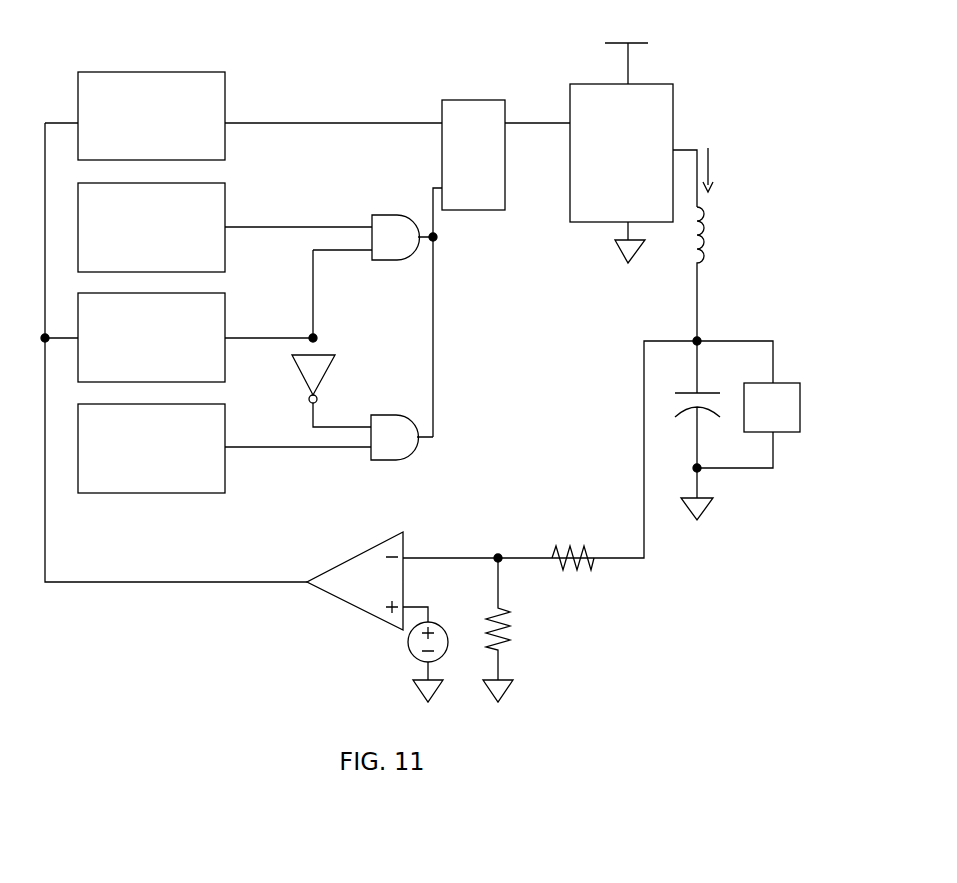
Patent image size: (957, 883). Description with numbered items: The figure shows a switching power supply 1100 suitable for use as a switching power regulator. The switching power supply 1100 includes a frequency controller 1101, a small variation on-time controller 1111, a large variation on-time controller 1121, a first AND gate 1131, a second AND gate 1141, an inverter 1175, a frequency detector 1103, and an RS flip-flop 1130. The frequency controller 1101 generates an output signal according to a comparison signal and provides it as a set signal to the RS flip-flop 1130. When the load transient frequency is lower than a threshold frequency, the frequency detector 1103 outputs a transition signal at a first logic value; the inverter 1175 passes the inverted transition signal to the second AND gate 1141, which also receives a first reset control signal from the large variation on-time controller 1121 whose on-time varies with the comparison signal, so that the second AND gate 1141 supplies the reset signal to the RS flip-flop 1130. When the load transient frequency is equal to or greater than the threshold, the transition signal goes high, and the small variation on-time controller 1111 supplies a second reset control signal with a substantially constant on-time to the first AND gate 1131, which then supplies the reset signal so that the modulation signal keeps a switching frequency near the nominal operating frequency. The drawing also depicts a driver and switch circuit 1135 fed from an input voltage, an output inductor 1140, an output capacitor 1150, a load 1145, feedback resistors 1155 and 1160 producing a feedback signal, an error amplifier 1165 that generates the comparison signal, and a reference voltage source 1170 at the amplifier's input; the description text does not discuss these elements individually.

The switching power supply 1100 is at (427, 356).
The frequency controller 1101 is at (228, 146).
The small variation on-time controller 1111 is at (228, 244).
The frequency detector 1103 is at (228, 363).
The large variation on-time controller 1121 is at (228, 487).
The first AND gate 1131 is at (392, 262).
The second AND gate 1141 is at (392, 462).
The inverter 1175 is at (326, 372).
The RS flip-flop 1130 is at (483, 212).
The driver and switch circuit 1135 is at (667, 73).
The inductor L 1140 is at (702, 262).
The output capacitor C 1150 is at (688, 383).
The load 1145 is at (799, 373).
The feedback resistor R1 1155 is at (590, 568).
The feedback resistor R2 1160 is at (512, 645).
The error amplifier EA 1165 is at (355, 612).
The reference voltage source 1170 is at (440, 662).